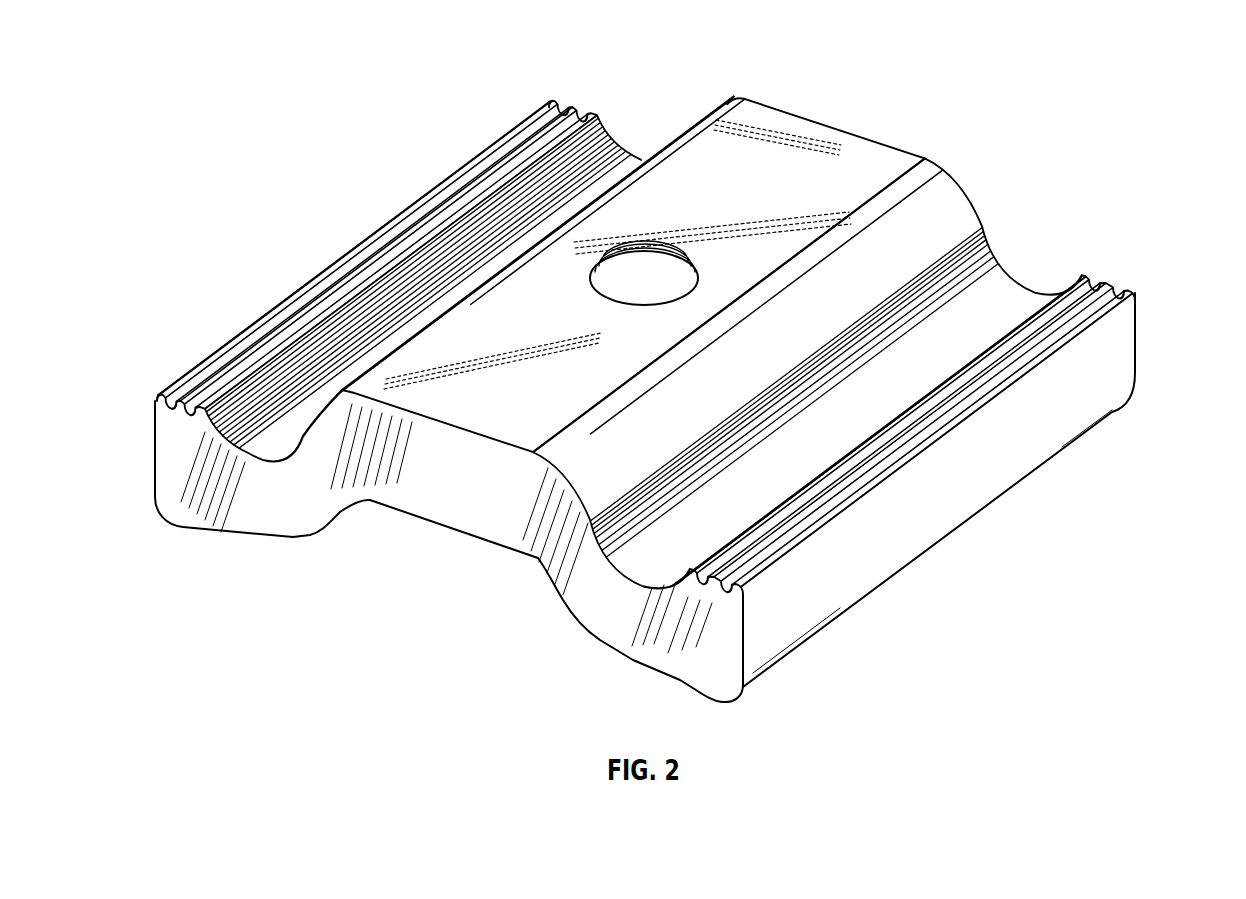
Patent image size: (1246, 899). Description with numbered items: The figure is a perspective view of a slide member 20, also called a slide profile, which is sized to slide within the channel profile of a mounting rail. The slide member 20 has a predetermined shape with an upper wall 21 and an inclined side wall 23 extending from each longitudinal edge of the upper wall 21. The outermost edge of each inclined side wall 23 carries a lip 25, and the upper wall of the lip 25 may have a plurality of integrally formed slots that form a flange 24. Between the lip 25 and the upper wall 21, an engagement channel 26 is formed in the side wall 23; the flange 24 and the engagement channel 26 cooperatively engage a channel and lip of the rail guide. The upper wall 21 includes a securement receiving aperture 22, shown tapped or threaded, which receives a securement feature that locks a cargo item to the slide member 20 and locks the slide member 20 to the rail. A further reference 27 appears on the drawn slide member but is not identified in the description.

The slide member 20 is at (248, 55).
The upper wall 21 is at (510, 388).
The securement receiving aperture 22 is at (653, 278).
The inclined side wall 23 is at (1021, 242).
The flange 24 is at (1067, 293).
The lip 25 is at (503, 133).
The engagement channel 26 is at (873, 365).
The curved groove surface 27 is at (380, 327).